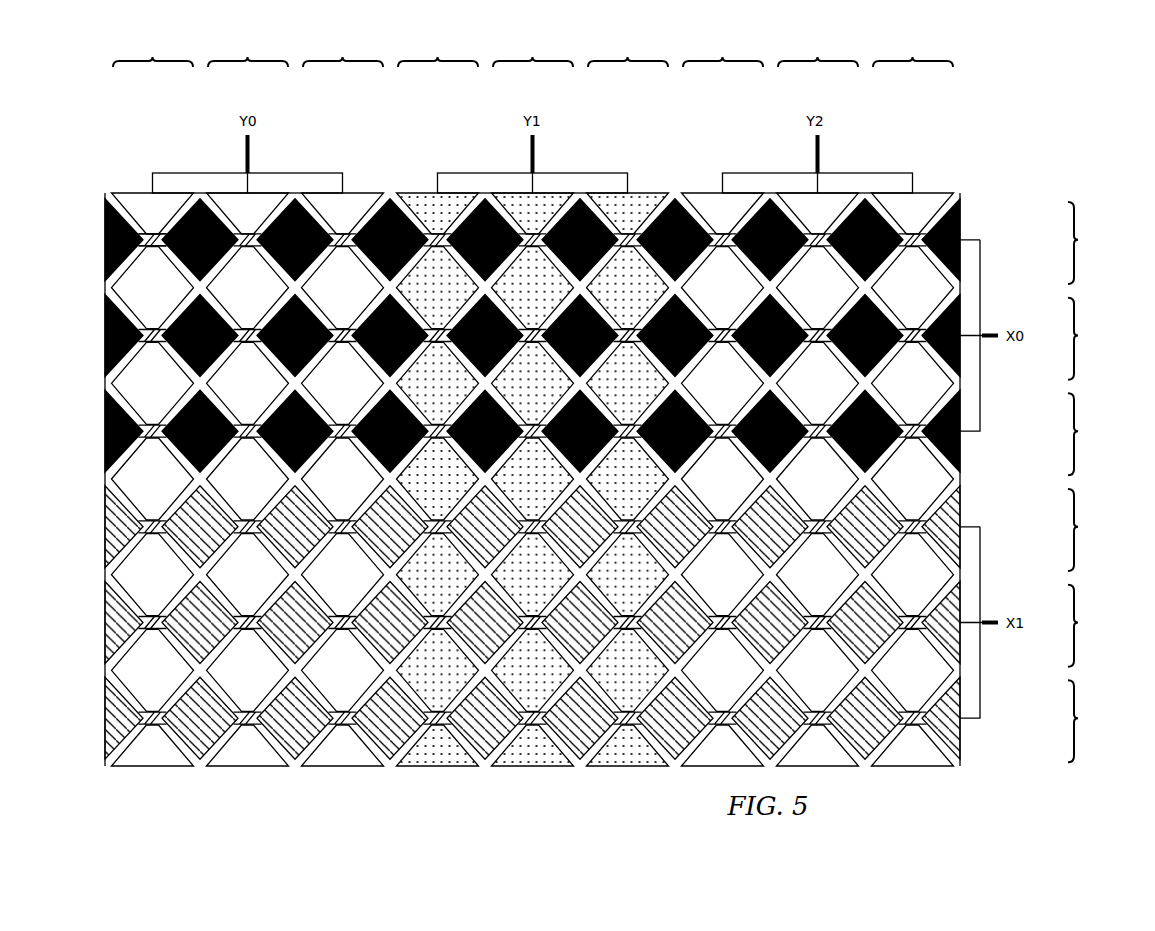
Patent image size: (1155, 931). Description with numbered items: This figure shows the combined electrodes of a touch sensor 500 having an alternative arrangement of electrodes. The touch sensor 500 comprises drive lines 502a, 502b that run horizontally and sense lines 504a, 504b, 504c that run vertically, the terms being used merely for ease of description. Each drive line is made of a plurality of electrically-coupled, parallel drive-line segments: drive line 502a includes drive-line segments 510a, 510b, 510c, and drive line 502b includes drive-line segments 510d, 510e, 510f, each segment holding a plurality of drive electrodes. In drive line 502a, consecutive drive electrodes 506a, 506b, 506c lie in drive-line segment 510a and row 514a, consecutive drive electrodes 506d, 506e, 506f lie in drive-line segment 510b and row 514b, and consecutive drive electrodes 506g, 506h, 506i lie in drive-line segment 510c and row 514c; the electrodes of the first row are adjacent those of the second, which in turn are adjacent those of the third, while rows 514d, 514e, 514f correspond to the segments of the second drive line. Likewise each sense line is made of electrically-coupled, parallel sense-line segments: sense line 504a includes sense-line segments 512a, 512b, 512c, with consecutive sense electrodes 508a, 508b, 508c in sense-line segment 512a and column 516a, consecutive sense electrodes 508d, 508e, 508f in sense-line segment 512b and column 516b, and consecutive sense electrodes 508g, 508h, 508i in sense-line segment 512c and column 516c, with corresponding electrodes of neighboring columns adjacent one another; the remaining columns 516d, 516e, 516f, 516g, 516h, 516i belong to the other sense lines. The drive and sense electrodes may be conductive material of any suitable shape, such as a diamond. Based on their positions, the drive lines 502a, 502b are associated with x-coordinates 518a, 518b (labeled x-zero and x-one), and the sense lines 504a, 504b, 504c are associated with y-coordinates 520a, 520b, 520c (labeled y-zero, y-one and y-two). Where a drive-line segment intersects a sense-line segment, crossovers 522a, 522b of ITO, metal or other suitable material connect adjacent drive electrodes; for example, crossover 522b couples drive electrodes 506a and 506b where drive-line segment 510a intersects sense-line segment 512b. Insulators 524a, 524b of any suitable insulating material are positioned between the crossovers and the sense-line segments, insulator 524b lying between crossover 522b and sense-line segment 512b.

The touch sensor 500 is at (1026, 114).
The drive line 502a is at (993, 333).
The drive line 502b is at (993, 620).
The sense line 504a is at (244, 160).
The sense line 504b is at (537, 158).
The sense line 504c is at (812, 158).
The drive electrode 506a is at (207, 212).
The drive electrode 506b is at (302, 212).
The drive electrode 506c is at (385, 213).
The drive electrode 506d is at (187, 320).
The drive electrode 506e is at (303, 317).
The drive electrode 506f is at (400, 318).
The drive electrode 506g is at (185, 418).
The drive electrode 506h is at (290, 418).
The drive electrode 506i is at (385, 440).
The sense electrode 508a is at (142, 483).
The sense electrode 508b is at (142, 578).
The sense electrode 508c is at (172, 690).
The sense electrode 508d is at (243, 492).
The sense electrode 508e is at (243, 587).
The sense electrode 508f is at (265, 690).
The sense electrode 508g is at (355, 487).
The sense electrode 508h is at (355, 585).
The sense electrode 508i is at (355, 682).
The drive-line segment 510a is at (104, 200).
The drive-line segment 510b is at (104, 325).
The drive-line segment 510c is at (105, 430).
The drive-line segment 510d is at (107, 547).
The drive-line segment 510e is at (107, 657).
The drive-line segment 510f is at (107, 718).
The sense-line segment 512a is at (153, 768).
The sense-line segment 512b is at (247, 768).
The sense-line segment 512c is at (342, 768).
The row 514a is at (1096, 243).
The row 514b is at (1096, 339).
The row 514c is at (1096, 434).
The row 514d is at (1096, 530).
The row 514e is at (1096, 626).
The row 514f is at (1096, 721).
The column 516a is at (153, 50).
The column 516b is at (248, 50).
The column 516c is at (343, 50).
The column 516d is at (438, 50).
The column 516e is at (533, 50).
The column 516f is at (628, 50).
The column 516g is at (723, 50).
The column 516h is at (818, 50).
The column 516i is at (913, 50).
The x-coordinate 518a is at (1017, 350).
The x-coordinate 518b is at (1017, 637).
The y-coordinate 520a is at (246, 108).
The y-coordinate 520b is at (548, 120).
The y-coordinate 520c is at (825, 120).
The crossover 522a is at (150, 234).
The crossover 522b is at (250, 236).
The insulator 524a is at (142, 246).
The insulator 524b is at (143, 254).